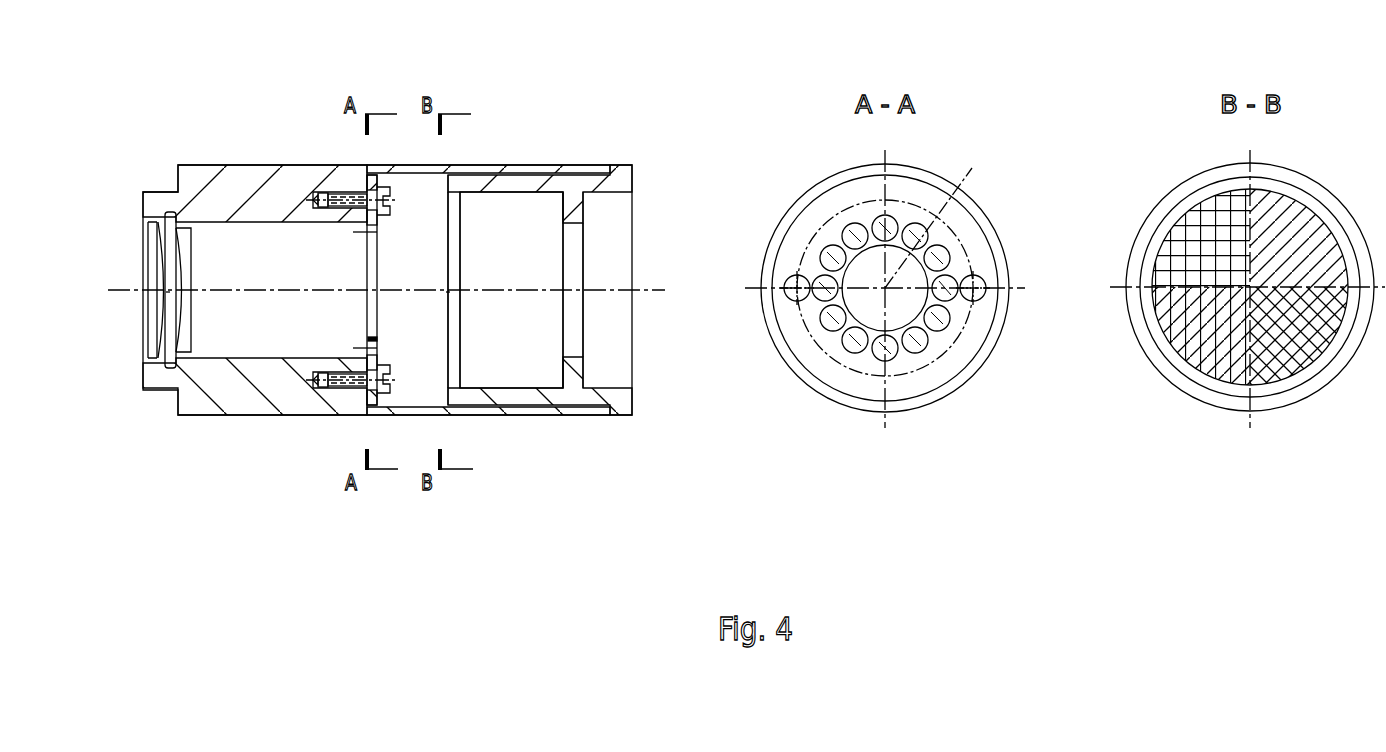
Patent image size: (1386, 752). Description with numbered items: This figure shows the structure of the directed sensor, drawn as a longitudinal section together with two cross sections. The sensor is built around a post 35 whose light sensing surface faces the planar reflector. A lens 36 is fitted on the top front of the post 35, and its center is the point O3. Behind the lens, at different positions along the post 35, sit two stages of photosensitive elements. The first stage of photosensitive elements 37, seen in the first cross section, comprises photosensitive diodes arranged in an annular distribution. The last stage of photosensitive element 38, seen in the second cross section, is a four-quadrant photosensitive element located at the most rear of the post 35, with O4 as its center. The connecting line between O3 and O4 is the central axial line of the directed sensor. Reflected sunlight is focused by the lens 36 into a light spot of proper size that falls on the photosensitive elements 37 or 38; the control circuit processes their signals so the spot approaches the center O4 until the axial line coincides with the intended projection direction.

The post 35 is at (268, 188).
The lens 36 is at (178, 222).
The first stage of photosensitive elements 37 is at (855, 236).
The last stage of photosensitive element 38 is at (1202, 235).
The center of lens O3 is at (168, 293).
The center of four-quadrant photosensitive element O4 is at (448, 295).